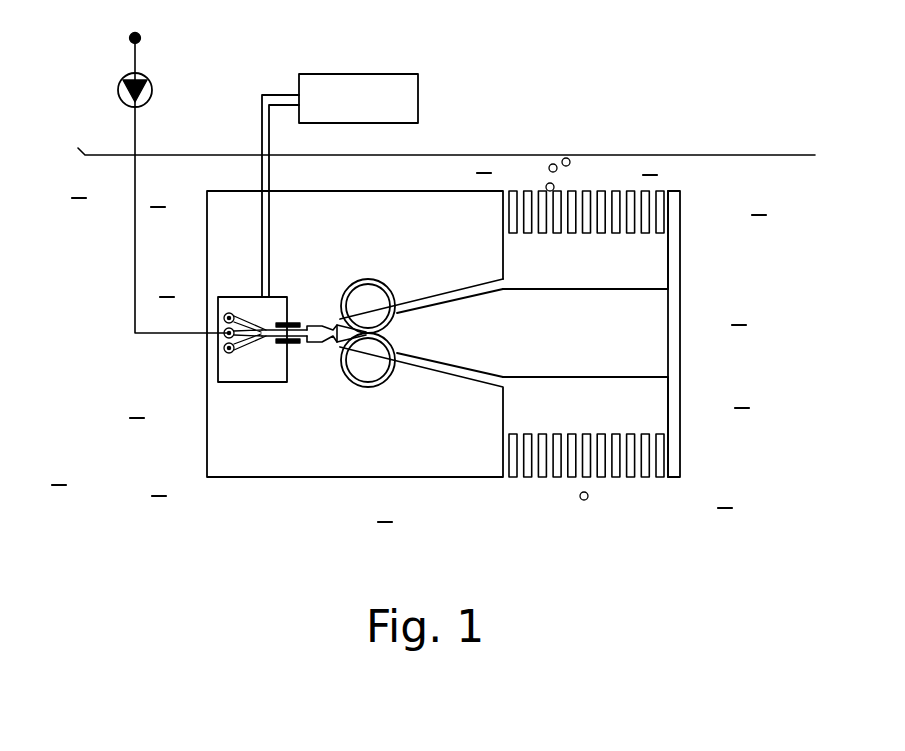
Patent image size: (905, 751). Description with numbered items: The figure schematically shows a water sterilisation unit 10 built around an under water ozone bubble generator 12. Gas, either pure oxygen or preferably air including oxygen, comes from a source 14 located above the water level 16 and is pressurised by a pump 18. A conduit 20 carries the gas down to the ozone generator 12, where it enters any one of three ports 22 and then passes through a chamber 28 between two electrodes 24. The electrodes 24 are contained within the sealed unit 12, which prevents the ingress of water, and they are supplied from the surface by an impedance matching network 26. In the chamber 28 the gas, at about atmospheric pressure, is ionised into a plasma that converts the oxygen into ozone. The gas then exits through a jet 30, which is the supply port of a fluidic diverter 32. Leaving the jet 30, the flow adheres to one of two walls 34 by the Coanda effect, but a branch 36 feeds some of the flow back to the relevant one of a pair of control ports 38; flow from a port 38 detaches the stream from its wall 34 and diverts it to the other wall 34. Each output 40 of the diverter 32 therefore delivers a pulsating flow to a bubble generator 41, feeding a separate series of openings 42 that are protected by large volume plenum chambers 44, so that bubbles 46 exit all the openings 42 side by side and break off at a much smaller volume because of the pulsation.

The water sterilisation unit 10 is at (596, 123).
The under water ozone bubble generator 12 is at (298, 486).
The source 14 is at (130, 38).
The water level 16 is at (756, 155).
The pump 18 is at (152, 92).
The conduit 20 is at (135, 333).
The ports 22 is at (224, 352).
The electrodes 24 is at (298, 322).
The impedance matching network 26 is at (340, 185).
The chamber 28 is at (305, 345).
The jet 30 is at (320, 346).
The fluidic diverter 32 is at (400, 257).
The walls 34 is at (380, 341).
The branch 36 is at (394, 292).
The control ports 38 is at (358, 330).
The output 40 is at (489, 376).
The bubble generator 41 is at (683, 223).
The openings 42 is at (640, 192).
The plenum chambers 44 is at (585, 334).
The bubbles 46 is at (584, 478).